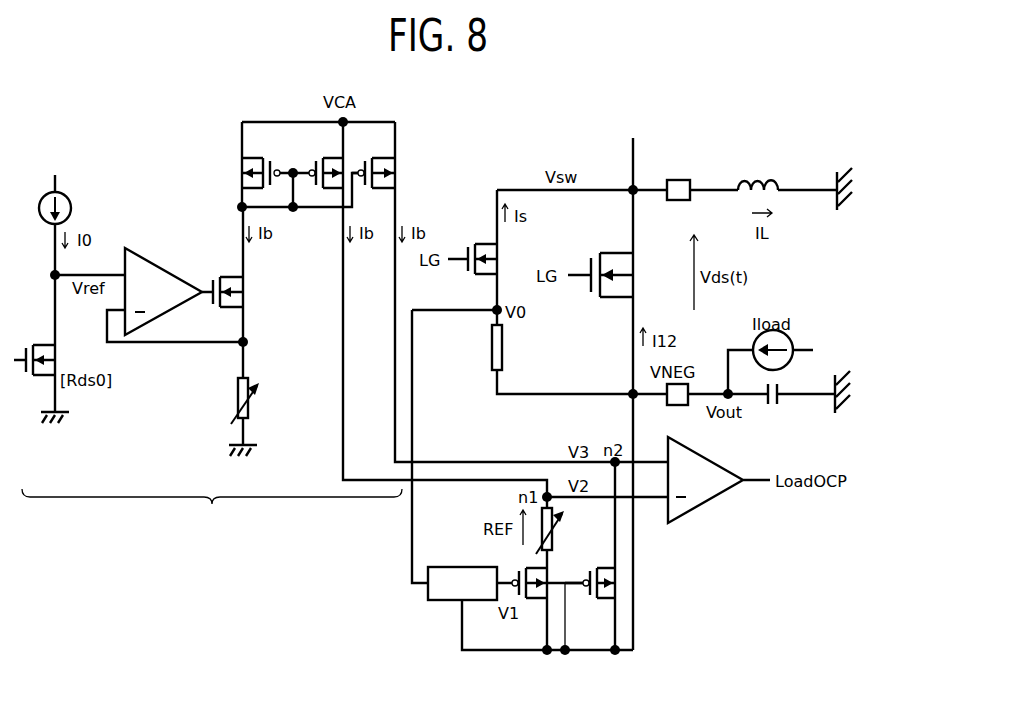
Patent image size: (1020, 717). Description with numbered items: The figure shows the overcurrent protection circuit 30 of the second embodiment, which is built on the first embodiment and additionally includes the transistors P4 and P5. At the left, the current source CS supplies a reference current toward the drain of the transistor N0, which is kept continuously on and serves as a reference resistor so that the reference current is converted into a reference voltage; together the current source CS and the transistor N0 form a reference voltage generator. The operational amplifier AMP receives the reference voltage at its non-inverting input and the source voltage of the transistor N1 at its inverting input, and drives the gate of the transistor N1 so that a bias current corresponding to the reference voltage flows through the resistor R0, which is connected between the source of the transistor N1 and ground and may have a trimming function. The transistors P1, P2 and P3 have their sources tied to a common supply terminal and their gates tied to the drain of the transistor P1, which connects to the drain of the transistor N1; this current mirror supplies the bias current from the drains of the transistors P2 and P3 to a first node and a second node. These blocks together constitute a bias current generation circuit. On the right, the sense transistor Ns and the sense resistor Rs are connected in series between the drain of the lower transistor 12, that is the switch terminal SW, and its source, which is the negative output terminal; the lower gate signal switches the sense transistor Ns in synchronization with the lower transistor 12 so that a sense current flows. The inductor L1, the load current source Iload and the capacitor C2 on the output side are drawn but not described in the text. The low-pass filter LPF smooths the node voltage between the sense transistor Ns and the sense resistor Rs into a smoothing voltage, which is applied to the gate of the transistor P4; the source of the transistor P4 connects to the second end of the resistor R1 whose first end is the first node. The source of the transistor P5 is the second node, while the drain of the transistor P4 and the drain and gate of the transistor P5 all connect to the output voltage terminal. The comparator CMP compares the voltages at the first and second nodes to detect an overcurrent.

The overcurrent protection circuit 30 is at (123, 117).
The lower transistor 12 is at (636, 275).
The current source CS is at (72, 208).
The operational amplifier AMP is at (165, 269).
The transistor N0 is at (61, 360).
The transistor N1 is at (248, 292).
The resistor R0 is at (258, 400).
The transistor P1 is at (234, 173).
The transistor P2 is at (348, 166).
The transistor P3 is at (404, 173).
The sense transistor Ns is at (500, 255).
The sense resistor Rs is at (503, 347).
The switch terminal SW is at (675, 170).
The inductor L1 is at (757, 172).
The load current source Iload is at (773, 350).
The output capacitor C2 is at (772, 408).
The comparator CMP is at (704, 504).
The resistor R1 is at (556, 532).
The low-pass filter LPF is at (462, 583).
The transistor P4 is at (549, 581).
The transistor P5 is at (621, 583).